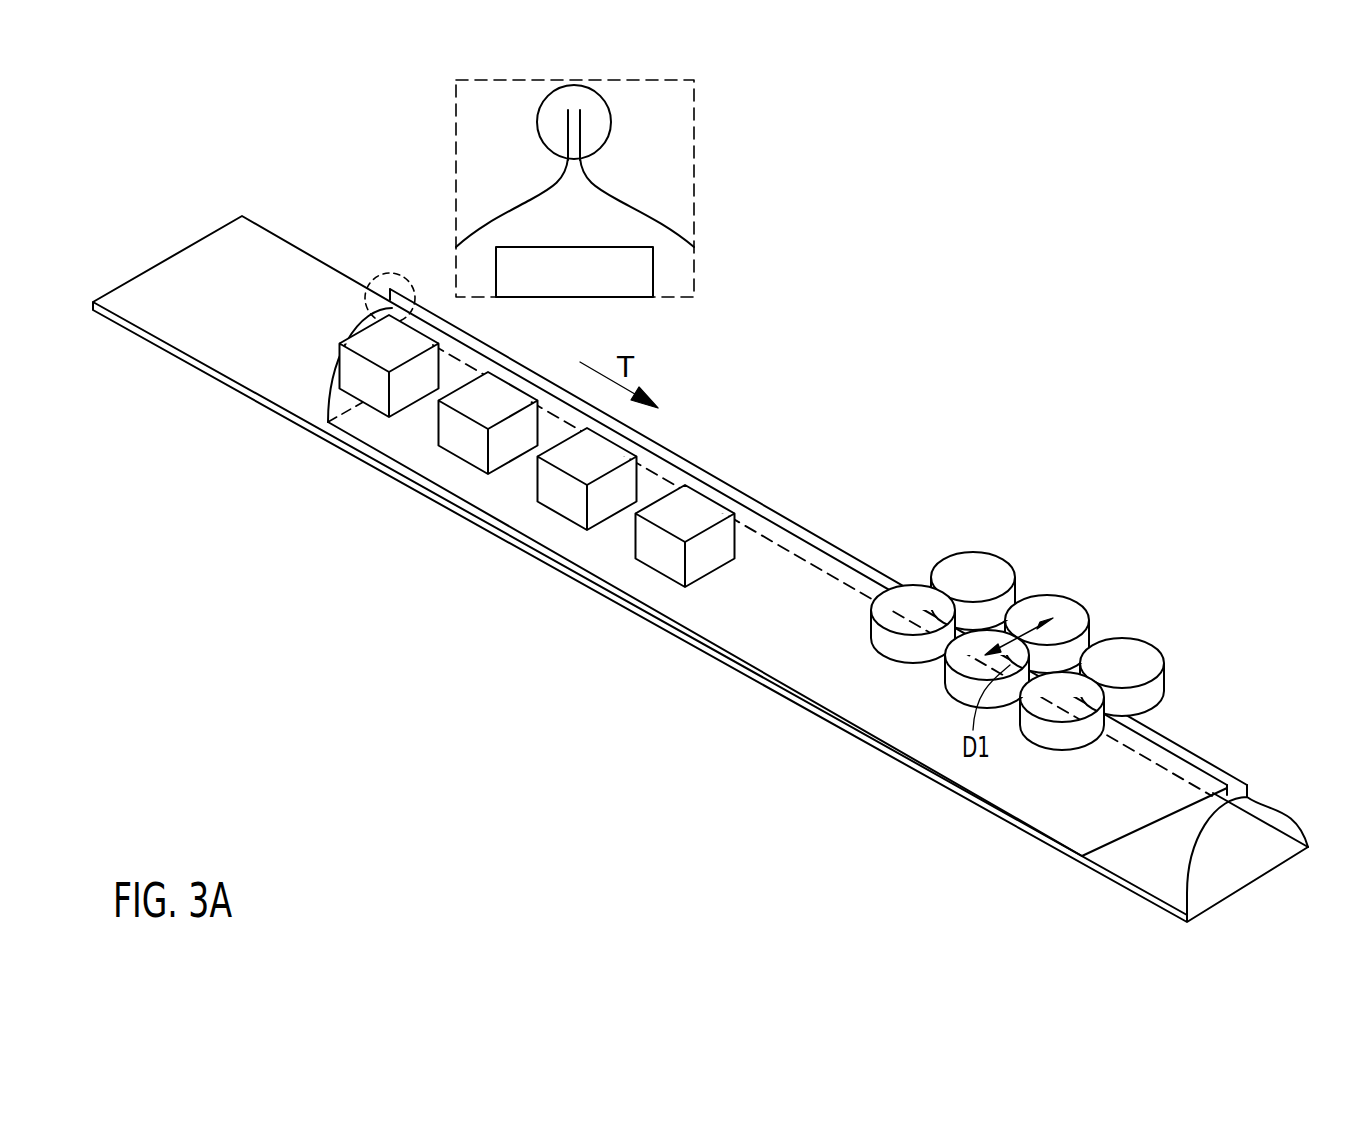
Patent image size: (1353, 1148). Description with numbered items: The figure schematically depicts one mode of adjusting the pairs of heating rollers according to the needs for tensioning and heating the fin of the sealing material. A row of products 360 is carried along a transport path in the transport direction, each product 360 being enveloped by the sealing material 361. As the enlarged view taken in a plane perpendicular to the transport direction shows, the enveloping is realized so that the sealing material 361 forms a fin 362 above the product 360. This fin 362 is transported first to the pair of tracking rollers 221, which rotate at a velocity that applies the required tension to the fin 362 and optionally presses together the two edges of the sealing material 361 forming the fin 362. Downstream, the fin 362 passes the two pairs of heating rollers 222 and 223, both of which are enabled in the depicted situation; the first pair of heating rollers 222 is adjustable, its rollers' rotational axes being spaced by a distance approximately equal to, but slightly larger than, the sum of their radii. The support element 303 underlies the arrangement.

The carrier plate 303 is at (252, 373).
The product 360 is at (693, 503).
The sealing material 361 is at (750, 652).
The fin 362 is at (612, 113).
The pair of tracking rollers 221 is at (1007, 552).
The first pair of heating rollers 222 is at (1078, 595).
The second pair of heating rollers 223 is at (1158, 637).